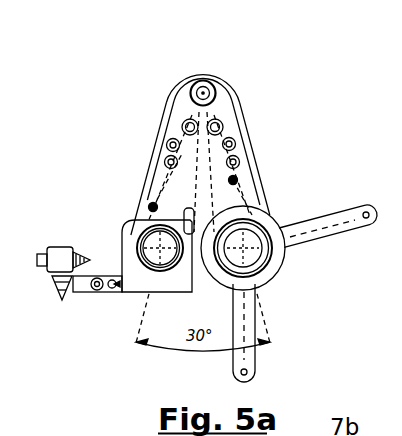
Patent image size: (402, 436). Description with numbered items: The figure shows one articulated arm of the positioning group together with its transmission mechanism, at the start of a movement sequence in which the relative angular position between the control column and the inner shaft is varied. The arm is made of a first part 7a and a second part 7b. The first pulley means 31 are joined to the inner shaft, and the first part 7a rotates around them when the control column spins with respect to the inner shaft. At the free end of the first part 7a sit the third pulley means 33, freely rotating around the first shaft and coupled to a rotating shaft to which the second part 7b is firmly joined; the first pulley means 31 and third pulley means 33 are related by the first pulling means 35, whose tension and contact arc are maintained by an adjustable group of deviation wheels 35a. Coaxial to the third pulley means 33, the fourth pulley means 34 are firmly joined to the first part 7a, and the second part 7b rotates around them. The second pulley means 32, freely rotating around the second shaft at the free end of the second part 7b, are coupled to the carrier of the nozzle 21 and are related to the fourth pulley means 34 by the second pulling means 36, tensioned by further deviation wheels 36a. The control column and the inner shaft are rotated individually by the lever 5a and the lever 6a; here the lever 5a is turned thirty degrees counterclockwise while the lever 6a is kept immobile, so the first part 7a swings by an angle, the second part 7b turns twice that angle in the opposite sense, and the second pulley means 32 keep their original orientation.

The lever 5a is at (250, 369).
The lever 6a is at (367, 210).
The first part of the articulated arm 7a is at (250, 122).
The second part of the articulated arm 7b is at (160, 120).
The nozzle 21 is at (57, 247).
The first pulley means 31 is at (264, 263).
The second pulley means 32 is at (138, 222).
The third pulley means 33 is at (230, 56).
The fourth pulley means 34 is at (211, 80).
The first pulling means 35 is at (238, 178).
The deviation wheels 35a is at (236, 142).
The second pulling means 36 is at (150, 203).
The deviation wheels 36a is at (167, 142).